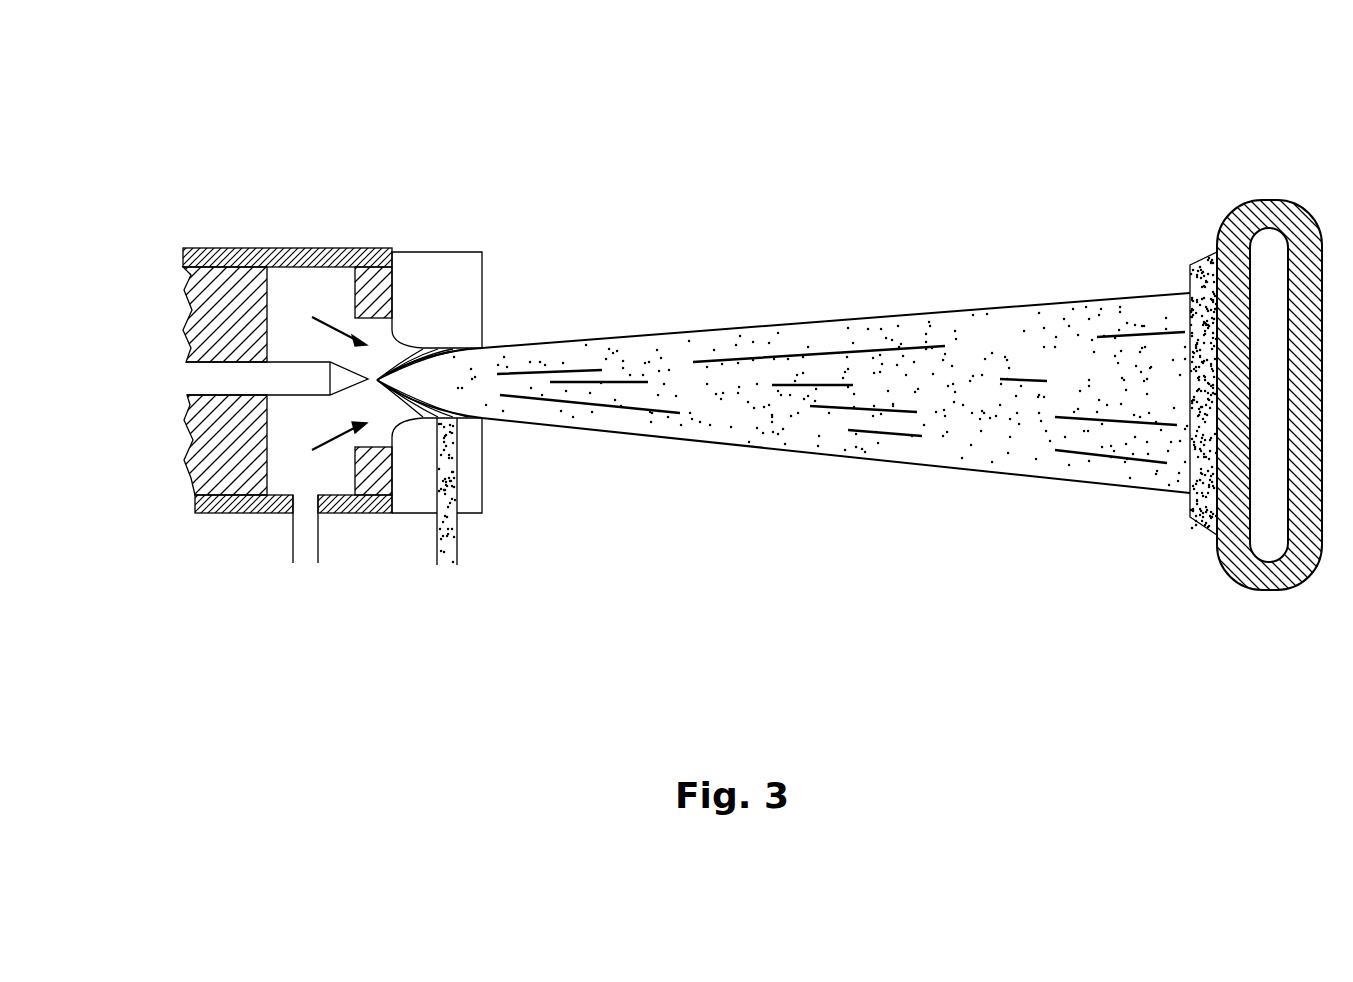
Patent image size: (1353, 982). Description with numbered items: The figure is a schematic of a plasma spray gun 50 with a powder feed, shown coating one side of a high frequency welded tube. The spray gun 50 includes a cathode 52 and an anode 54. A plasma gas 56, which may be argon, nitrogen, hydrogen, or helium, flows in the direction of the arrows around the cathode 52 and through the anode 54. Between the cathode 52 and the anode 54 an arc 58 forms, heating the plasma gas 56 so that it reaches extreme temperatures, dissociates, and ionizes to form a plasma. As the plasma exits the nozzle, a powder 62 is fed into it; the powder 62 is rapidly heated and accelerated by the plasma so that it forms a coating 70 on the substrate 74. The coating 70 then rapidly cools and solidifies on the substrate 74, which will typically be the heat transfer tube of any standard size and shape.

The spray gun 50 is at (267, 173).
The cathode 52 is at (187, 378).
The anode 54 is at (445, 270).
The plasma gas 56 is at (305, 563).
The arc 58 is at (495, 346).
The powder 62 is at (446, 565).
The coating 70 is at (1207, 258).
The substrate 74 is at (1250, 201).